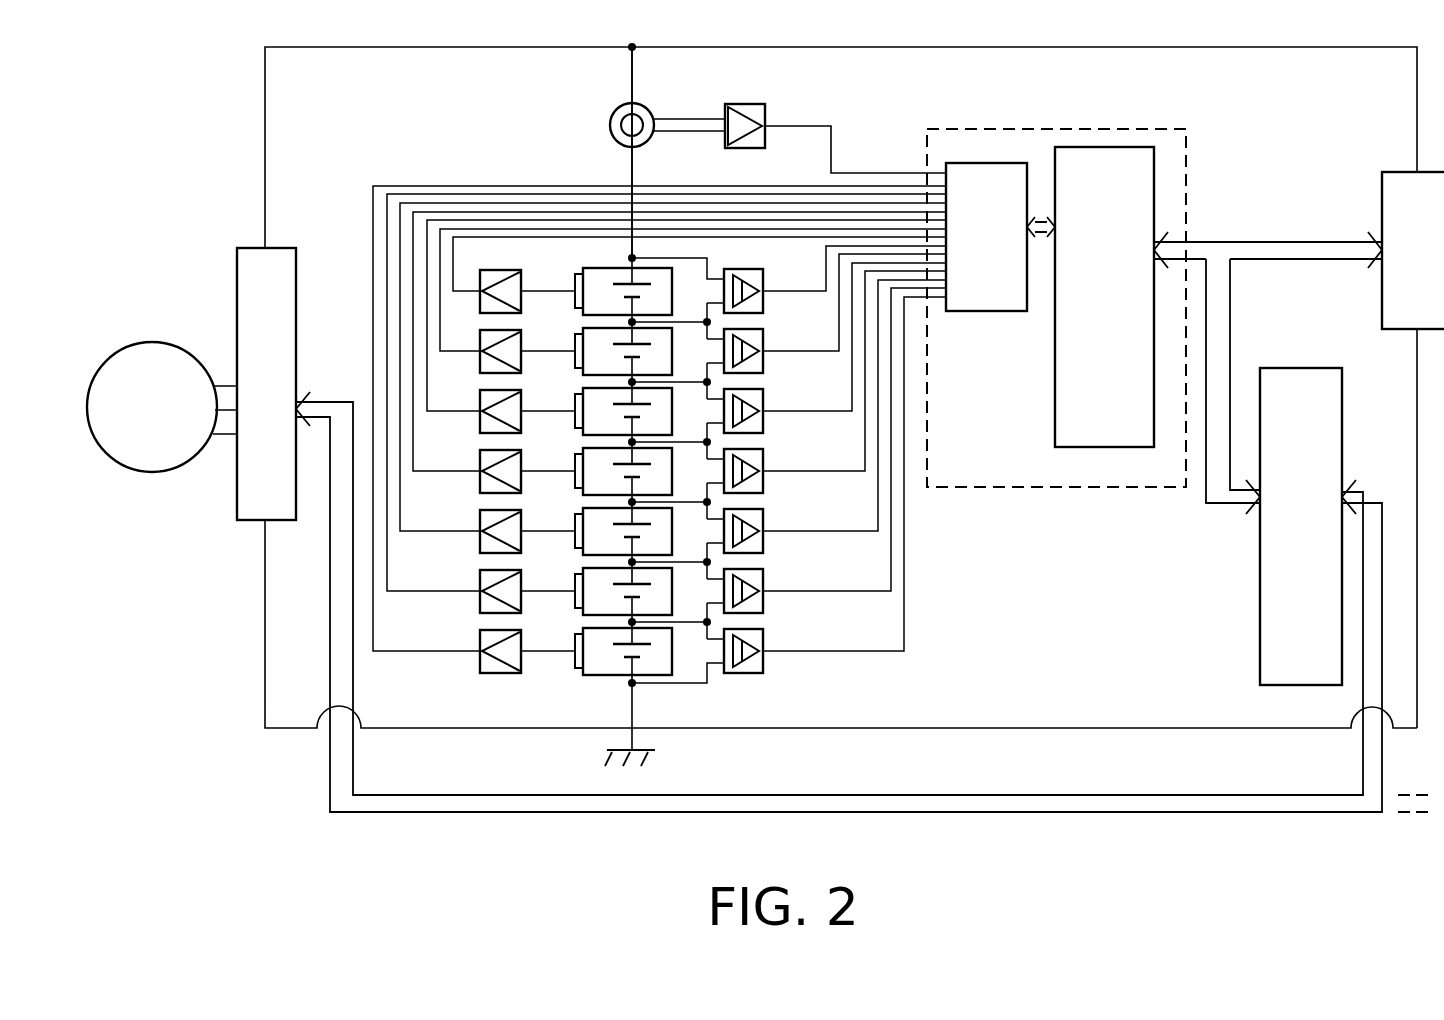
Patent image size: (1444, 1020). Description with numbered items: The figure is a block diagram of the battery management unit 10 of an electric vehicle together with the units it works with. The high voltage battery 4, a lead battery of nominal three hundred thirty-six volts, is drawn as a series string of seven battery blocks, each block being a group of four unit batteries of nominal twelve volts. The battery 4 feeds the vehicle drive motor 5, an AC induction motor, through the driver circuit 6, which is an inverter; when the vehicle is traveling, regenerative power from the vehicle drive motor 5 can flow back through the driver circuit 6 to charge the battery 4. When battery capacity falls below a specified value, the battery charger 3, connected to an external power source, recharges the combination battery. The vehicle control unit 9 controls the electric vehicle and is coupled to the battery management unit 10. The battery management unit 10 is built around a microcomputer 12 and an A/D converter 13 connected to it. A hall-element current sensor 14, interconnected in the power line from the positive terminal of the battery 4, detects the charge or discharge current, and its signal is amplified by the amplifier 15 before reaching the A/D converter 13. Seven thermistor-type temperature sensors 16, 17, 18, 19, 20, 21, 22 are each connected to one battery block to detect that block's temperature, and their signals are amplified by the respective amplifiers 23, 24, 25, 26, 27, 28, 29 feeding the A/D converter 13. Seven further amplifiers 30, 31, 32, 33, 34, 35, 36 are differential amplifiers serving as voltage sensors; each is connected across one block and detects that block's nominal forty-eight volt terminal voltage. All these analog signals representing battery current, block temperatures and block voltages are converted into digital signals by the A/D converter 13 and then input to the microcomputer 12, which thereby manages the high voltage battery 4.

The battery charger 3 is at (1386, 172).
The high voltage battery 4 is at (596, 256).
The vehicle drive motor 5 is at (160, 340).
The driver circuit 6 is at (296, 262).
The vehicle control unit 9 is at (1260, 572).
The battery management unit 10 is at (1128, 126).
The microcomputer 12 is at (1055, 402).
The A/D converter 13 is at (988, 312).
The current sensor 14 is at (619, 108).
The amplifier 15 is at (737, 104).
The temperature sensor 16 is at (577, 282).
The temperature sensor 17 is at (577, 342).
The temperature sensor 18 is at (577, 402).
The temperature sensor 19 is at (577, 462).
The temperature sensor 20 is at (577, 522).
The temperature sensor 21 is at (577, 582).
The temperature sensor 22 is at (577, 640).
The amplifier 23 is at (483, 293).
The amplifier 24 is at (481, 371).
The amplifier 25 is at (481, 432).
The amplifier 26 is at (481, 487).
The amplifier 27 is at (481, 547).
The amplifier 28 is at (481, 611).
The amplifier 29 is at (481, 671).
The amplifier 30 is at (767, 273).
The amplifier 31 is at (767, 333).
The amplifier 32 is at (767, 393).
The amplifier 33 is at (767, 453).
The amplifier 34 is at (767, 513).
The amplifier 35 is at (767, 573).
The amplifier 36 is at (767, 633).